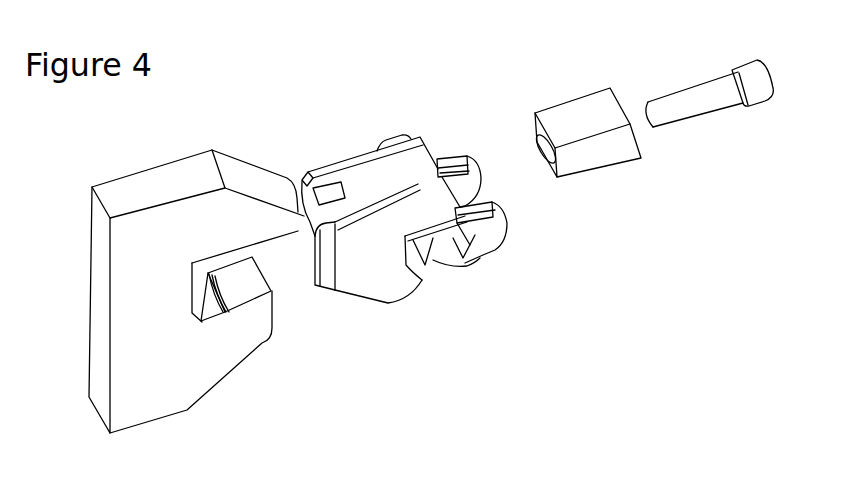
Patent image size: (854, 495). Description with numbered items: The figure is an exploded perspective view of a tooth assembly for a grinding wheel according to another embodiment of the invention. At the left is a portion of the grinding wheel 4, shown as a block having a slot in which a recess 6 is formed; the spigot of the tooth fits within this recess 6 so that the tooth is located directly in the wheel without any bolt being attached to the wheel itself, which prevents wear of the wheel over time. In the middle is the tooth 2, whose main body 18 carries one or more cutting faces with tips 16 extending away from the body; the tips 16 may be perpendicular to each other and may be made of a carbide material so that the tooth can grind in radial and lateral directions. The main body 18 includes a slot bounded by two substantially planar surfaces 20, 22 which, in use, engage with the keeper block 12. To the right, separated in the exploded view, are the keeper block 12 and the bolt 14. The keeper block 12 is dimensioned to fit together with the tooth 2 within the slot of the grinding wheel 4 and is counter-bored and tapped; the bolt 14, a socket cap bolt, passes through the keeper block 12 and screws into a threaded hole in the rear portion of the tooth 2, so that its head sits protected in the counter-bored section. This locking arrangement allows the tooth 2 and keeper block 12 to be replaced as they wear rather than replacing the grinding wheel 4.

The tooth 2 is at (445, 226).
The grinding wheel 4 is at (222, 383).
The recess 6 is at (207, 308).
The keeper block 12 is at (615, 167).
The bolt 14 is at (708, 112).
The cutting face / tips 16 is at (505, 240).
The main body 18 is at (355, 293).
The planar surface 20 is at (447, 210).
The planar surface 22 is at (420, 150).